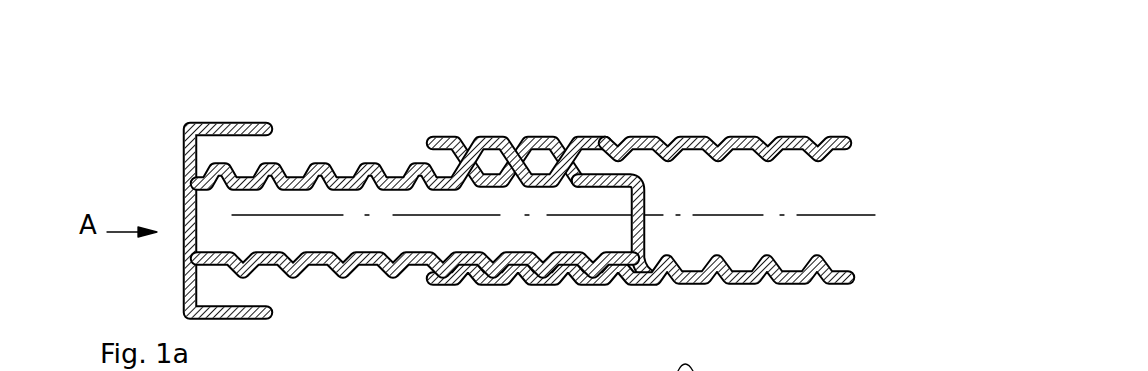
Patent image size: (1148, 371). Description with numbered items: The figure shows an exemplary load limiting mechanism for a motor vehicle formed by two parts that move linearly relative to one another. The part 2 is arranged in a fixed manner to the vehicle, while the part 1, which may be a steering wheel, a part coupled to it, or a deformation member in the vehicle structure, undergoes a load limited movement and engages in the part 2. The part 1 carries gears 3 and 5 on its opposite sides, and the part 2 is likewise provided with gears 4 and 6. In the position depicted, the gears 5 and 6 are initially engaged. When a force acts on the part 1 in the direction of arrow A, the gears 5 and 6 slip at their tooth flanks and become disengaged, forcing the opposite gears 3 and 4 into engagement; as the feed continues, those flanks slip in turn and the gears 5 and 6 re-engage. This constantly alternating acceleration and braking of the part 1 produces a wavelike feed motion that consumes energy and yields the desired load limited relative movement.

The part 1 is at (182, 213).
The part 2 is at (653, 134).
The gear 3 is at (370, 165).
The gear 4 is at (520, 137).
The gear 5 is at (348, 279).
The gear 6 is at (718, 274).